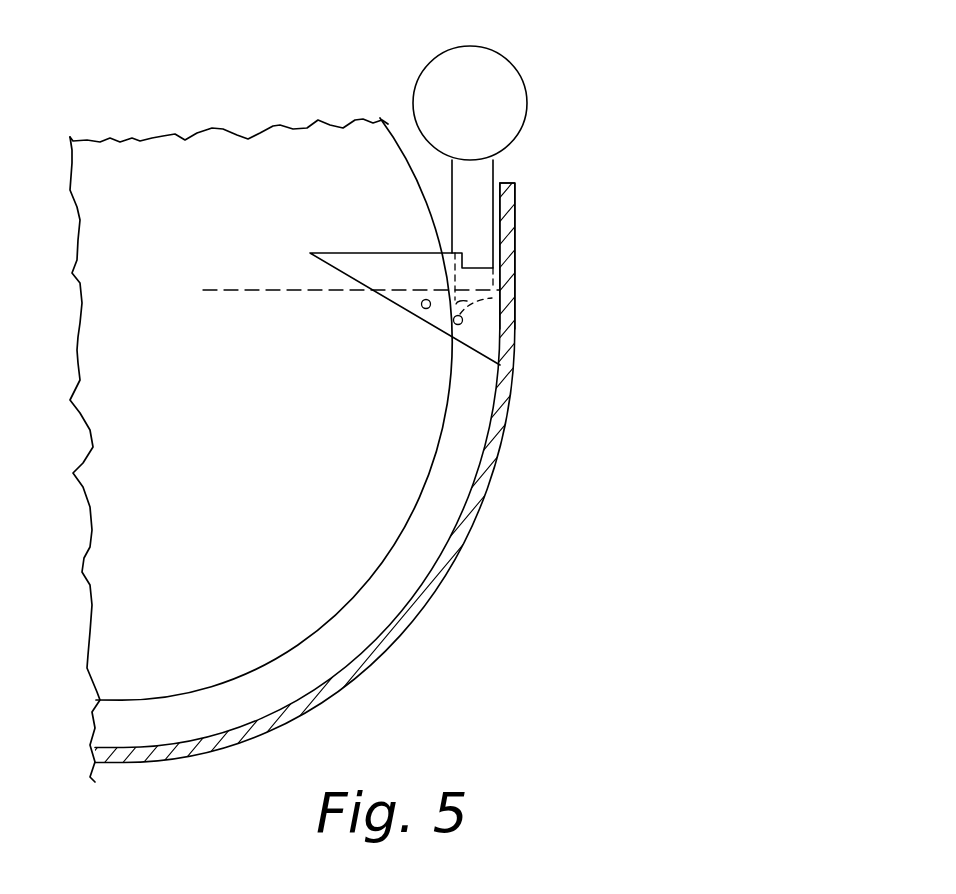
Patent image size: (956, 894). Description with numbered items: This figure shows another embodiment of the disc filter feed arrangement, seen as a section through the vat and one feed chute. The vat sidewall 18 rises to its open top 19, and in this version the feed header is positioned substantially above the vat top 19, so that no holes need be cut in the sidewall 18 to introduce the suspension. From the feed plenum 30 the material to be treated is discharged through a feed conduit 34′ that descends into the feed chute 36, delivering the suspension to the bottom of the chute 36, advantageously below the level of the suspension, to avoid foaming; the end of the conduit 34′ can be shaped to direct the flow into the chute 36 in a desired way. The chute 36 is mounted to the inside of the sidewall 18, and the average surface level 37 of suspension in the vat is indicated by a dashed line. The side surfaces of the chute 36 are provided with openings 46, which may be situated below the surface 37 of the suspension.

The sidewall 18 is at (478, 505).
The open top 19 is at (507, 183).
The feed tube 30 is at (500, 98).
The feed conduit 34′ is at (478, 197).
The feed chute 36 is at (467, 301).
The average surface level of suspension 37 is at (232, 290).
The openings 46 is at (458, 325).